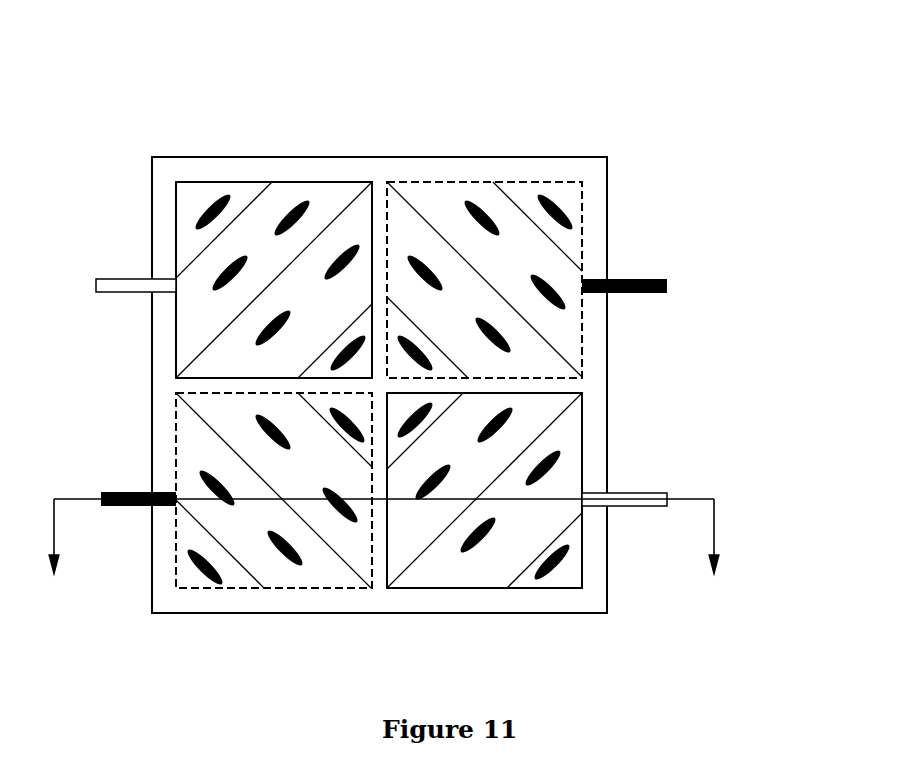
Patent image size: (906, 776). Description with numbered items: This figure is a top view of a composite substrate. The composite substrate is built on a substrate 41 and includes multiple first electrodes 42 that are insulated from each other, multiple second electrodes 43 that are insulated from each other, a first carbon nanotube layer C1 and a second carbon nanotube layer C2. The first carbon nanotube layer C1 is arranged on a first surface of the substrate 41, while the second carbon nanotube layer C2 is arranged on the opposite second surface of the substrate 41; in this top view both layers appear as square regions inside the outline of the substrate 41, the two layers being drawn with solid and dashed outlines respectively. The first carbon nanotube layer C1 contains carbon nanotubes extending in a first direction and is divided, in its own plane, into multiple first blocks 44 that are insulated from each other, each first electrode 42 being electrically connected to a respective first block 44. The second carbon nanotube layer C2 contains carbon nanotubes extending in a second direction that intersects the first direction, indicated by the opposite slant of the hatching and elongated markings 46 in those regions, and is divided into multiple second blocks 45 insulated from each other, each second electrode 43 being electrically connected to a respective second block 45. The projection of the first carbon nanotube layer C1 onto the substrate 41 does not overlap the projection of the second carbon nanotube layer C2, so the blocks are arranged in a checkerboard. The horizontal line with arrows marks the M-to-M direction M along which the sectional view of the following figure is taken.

The substrate 41 is at (470, 157).
The first electrode 42 is at (640, 493).
The second electrode 43 is at (640, 279).
The first block 44 is at (478, 588).
The second block 45 is at (272, 588).
The liquid crystal molecule 46 is at (200, 569).
The first carbon nanotube layer C1 is at (241, 213).
The second carbon nanotube layer C2 is at (411, 202).
The M-to-M direction M is at (385, 560).